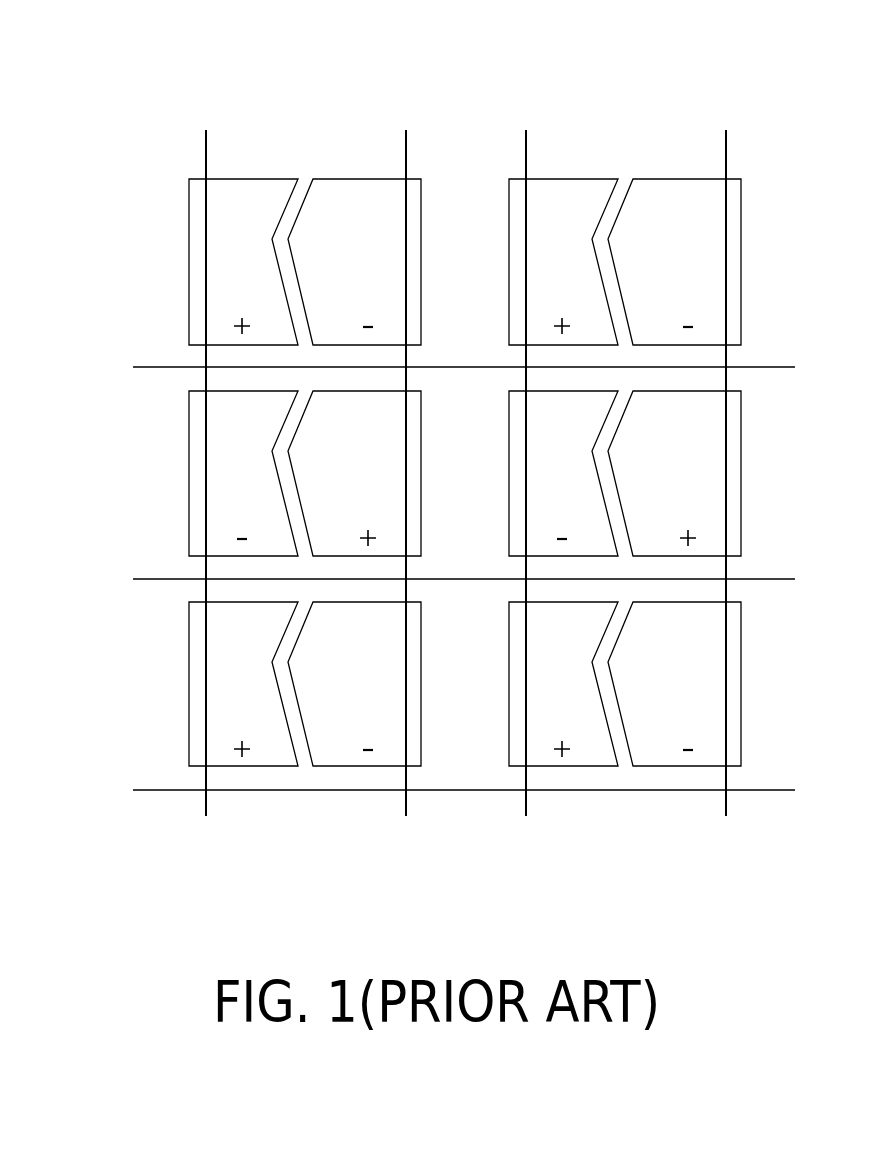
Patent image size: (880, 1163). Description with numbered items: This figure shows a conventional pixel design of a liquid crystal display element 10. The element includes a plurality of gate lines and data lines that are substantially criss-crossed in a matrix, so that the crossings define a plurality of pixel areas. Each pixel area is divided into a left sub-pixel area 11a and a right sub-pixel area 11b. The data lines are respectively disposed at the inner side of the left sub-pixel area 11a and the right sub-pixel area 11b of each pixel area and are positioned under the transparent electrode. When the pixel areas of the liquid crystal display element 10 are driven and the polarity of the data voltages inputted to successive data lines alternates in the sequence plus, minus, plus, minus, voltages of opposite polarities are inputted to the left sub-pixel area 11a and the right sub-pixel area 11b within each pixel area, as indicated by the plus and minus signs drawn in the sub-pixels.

The liquid crystal display element 10 is at (52, 30).
The left sub-pixel area 11a is at (197, 272).
The right sub-pixel area 11b is at (337, 188).